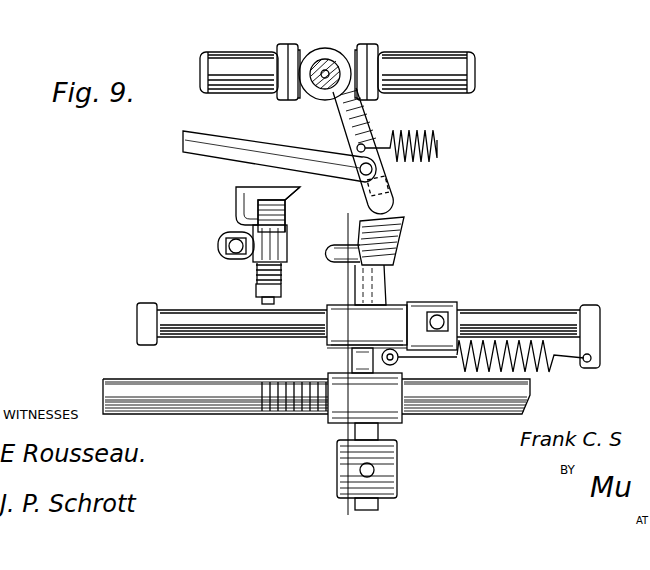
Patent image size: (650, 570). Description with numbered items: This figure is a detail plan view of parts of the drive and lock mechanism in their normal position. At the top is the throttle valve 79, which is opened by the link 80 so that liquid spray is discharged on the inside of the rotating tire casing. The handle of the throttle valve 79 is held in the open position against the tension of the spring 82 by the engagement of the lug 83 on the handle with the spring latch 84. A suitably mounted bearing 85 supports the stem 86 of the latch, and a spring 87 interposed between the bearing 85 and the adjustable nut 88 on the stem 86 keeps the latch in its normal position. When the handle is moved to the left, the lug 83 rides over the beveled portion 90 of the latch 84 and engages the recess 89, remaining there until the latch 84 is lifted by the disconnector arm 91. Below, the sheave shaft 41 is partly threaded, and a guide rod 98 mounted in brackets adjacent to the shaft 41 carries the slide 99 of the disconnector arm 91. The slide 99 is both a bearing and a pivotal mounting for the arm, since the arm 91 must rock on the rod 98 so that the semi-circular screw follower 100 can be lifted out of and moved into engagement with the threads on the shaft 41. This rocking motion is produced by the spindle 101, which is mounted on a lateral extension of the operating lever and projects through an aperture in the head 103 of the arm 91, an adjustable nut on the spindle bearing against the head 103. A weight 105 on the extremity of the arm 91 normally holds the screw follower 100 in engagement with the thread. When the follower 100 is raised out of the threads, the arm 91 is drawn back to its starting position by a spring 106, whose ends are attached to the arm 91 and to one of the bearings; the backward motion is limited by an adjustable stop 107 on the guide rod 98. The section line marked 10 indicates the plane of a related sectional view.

The throttle valve 79 is at (334, 60).
The link 80 is at (236, 137).
The spring 82 is at (437, 138).
The lug 83 is at (396, 189).
The spring latch 84 is at (238, 190).
The bearing 85 is at (228, 261).
The stem 86 is at (276, 299).
The spring 87 is at (284, 271).
The adjustable nut 88 is at (256, 289).
The recess 89 is at (270, 195).
The beveled portion 90 is at (290, 201).
The disconnector arm 91 is at (381, 290).
The guide rod 98 is at (274, 330).
The slide 99 is at (392, 339).
The semi-circular screw follower 100 is at (398, 426).
The spindle 101 is at (343, 253).
The head 103 is at (405, 232).
The weight 105 is at (398, 478).
The spring 106 is at (529, 367).
The adjustable stop 107 is at (423, 304).
The sheave shaft 41 is at (219, 415).
The shaft axis 10 is at (381, 218).